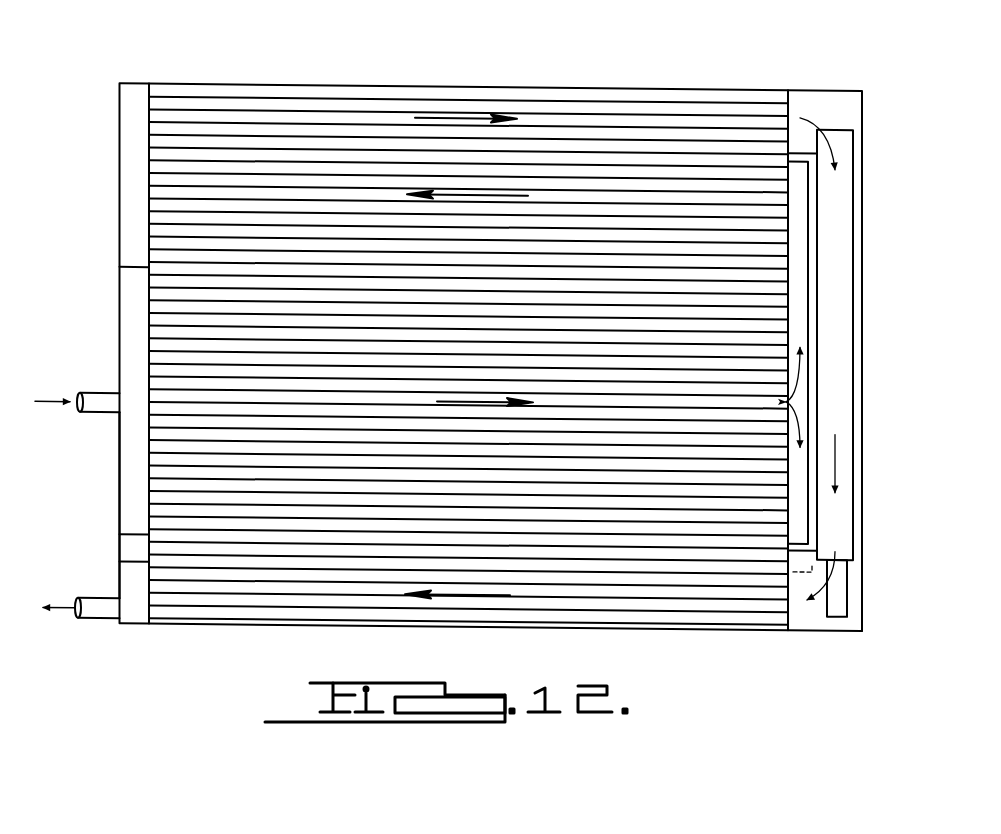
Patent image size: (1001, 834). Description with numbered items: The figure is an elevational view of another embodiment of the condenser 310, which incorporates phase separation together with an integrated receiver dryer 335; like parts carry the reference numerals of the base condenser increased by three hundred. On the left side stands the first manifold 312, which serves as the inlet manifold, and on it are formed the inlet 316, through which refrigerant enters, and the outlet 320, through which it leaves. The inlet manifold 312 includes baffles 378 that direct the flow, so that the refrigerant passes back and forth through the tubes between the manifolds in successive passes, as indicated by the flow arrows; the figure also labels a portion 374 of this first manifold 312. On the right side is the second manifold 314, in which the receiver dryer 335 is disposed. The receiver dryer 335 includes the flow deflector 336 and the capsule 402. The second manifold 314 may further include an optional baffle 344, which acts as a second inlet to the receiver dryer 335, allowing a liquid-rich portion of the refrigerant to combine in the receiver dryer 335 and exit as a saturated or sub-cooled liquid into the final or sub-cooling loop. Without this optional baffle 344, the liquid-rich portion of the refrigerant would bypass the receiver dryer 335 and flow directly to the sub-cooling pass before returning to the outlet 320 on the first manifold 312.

The condenser 310 is at (98, 77).
The first manifold 312 is at (116, 163).
The second manifold 314 is at (869, 97).
The inlet 316 is at (93, 391).
The outlet 320 is at (98, 616).
The receiver dryer 335 is at (863, 482).
The flow deflector 336 is at (812, 180).
The baffle 344 is at (790, 557).
The header tank portion 374 is at (130, 453).
The baffles 378 is at (134, 265).
The capsule 402 is at (835, 109).